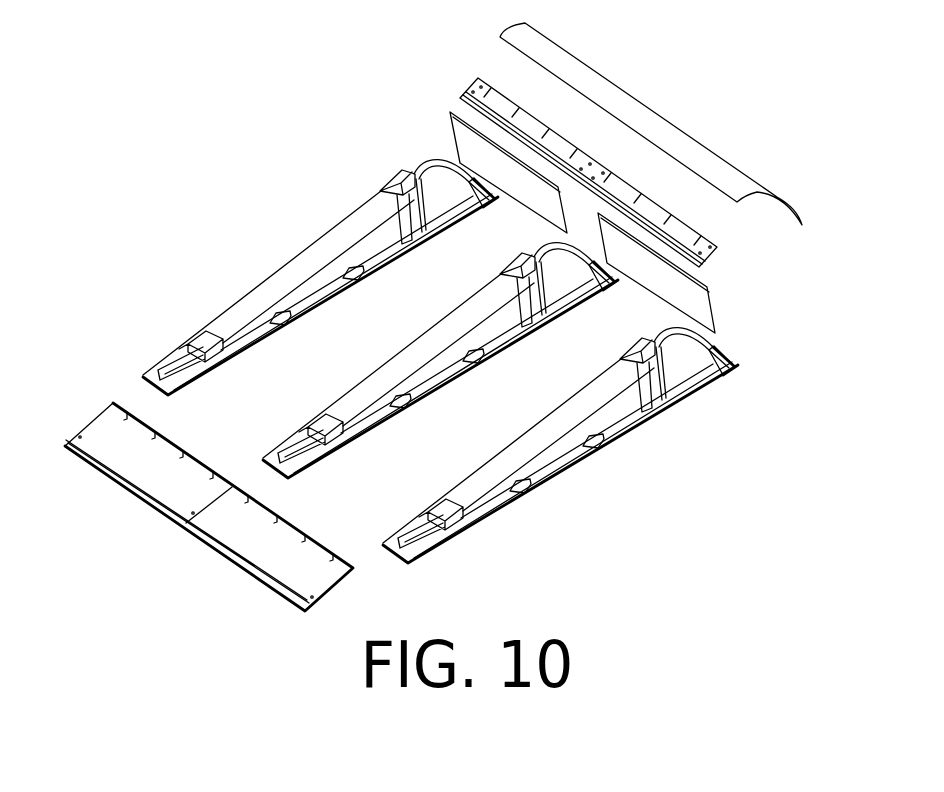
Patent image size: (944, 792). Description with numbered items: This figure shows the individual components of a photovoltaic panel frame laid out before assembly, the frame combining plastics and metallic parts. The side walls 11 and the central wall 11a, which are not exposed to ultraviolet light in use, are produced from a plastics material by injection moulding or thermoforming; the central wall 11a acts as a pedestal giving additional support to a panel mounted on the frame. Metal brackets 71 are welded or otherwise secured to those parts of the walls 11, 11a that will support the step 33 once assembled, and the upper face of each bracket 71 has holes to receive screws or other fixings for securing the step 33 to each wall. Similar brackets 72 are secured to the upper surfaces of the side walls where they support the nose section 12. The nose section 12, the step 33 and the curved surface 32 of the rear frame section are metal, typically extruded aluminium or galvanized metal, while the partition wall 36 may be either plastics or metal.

The side wall 11 is at (320, 254).
The central wall 11a is at (342, 410).
The nose section 12 is at (247, 537).
The curved surface 32 is at (638, 112).
The step 33 is at (680, 228).
The partition wall 36 is at (695, 297).
The metal bracket 71 is at (366, 154).
The bracket 72 is at (465, 549).